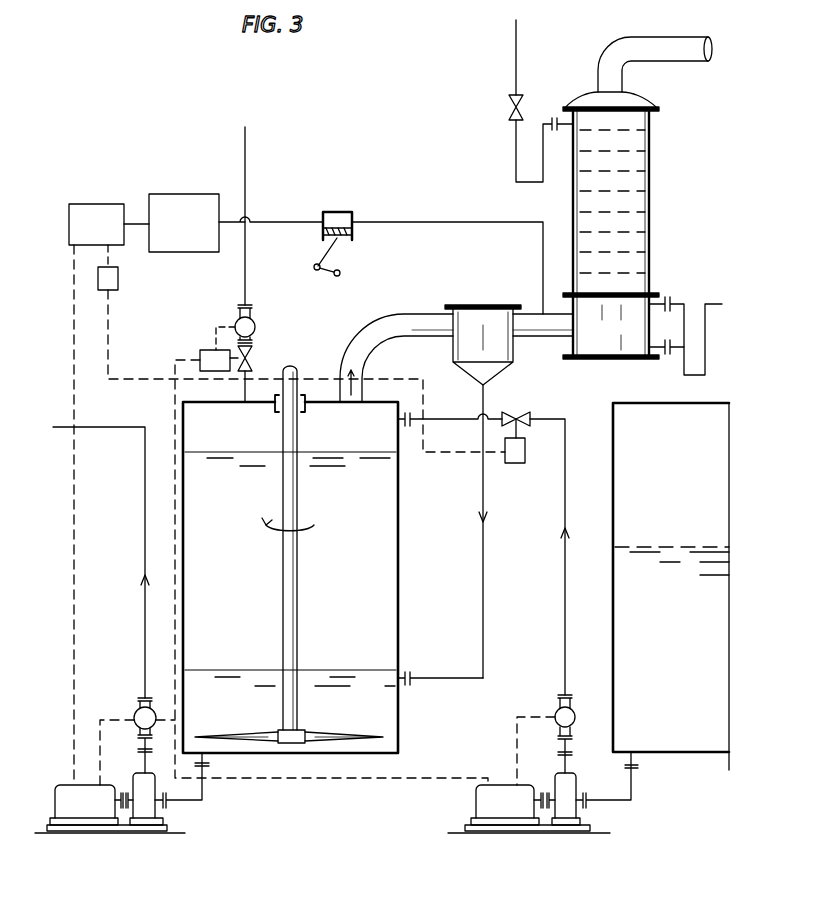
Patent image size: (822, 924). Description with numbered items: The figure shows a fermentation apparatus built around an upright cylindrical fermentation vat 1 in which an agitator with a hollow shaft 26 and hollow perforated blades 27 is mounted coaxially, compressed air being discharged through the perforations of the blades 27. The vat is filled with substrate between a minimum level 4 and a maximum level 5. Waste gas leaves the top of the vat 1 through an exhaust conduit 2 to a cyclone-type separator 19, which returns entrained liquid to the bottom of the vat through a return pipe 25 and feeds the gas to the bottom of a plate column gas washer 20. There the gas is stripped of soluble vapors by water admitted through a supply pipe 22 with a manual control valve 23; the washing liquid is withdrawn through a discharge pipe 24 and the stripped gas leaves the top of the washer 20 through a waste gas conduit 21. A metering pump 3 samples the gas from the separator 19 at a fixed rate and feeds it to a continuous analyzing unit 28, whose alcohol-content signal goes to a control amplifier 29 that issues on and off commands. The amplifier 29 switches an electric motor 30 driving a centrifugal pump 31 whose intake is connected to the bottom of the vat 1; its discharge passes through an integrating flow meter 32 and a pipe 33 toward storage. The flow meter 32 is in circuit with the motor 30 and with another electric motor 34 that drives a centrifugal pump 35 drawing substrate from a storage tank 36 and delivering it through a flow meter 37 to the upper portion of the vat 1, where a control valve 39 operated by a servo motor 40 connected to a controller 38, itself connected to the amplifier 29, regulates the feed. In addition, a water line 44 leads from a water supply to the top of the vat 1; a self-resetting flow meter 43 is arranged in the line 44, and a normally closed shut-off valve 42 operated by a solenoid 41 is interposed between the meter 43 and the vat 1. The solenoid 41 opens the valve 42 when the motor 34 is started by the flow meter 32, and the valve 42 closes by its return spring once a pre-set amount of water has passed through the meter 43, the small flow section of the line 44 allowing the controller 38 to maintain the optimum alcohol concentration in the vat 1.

The fermentation vat 1 is at (400, 580).
The exhaust conduit 2 is at (392, 322).
The metering pump 3 is at (342, 218).
The minimum level 4 is at (332, 668).
The maximum level 5 is at (331, 451).
The separator 19 is at (470, 302).
The plate column gas washer 20 is at (656, 202).
The waste gas conduit 21 is at (687, 50).
The supply pipe 22 is at (516, 29).
The manual control valve 23 is at (509, 101).
The discharge pipe 24 is at (701, 334).
The return pipe 25 is at (480, 544).
The hollow shaft 26 is at (297, 560).
The hollow perforated blades 27 is at (338, 732).
The continuous analyzing unit 28 is at (196, 234).
The control amplifier 29 is at (108, 236).
The electric motor 30 is at (94, 816).
The centrifugal pump 31 is at (140, 782).
The integrating flow meter 32 is at (135, 714).
The pipe 33 is at (145, 558).
The electric motor 34 is at (517, 816).
The centrifugal pump 35 is at (563, 777).
The storage tank 36 is at (613, 600).
The flow meter 37 is at (557, 711).
The controller 38 is at (118, 279).
The control valve 39 is at (524, 406).
The servo motor 40 is at (516, 458).
The solenoid 41 is at (200, 352).
The shut-off valve 42 is at (253, 357).
The flow meter 43 is at (251, 324).
The water line 44 is at (245, 146).